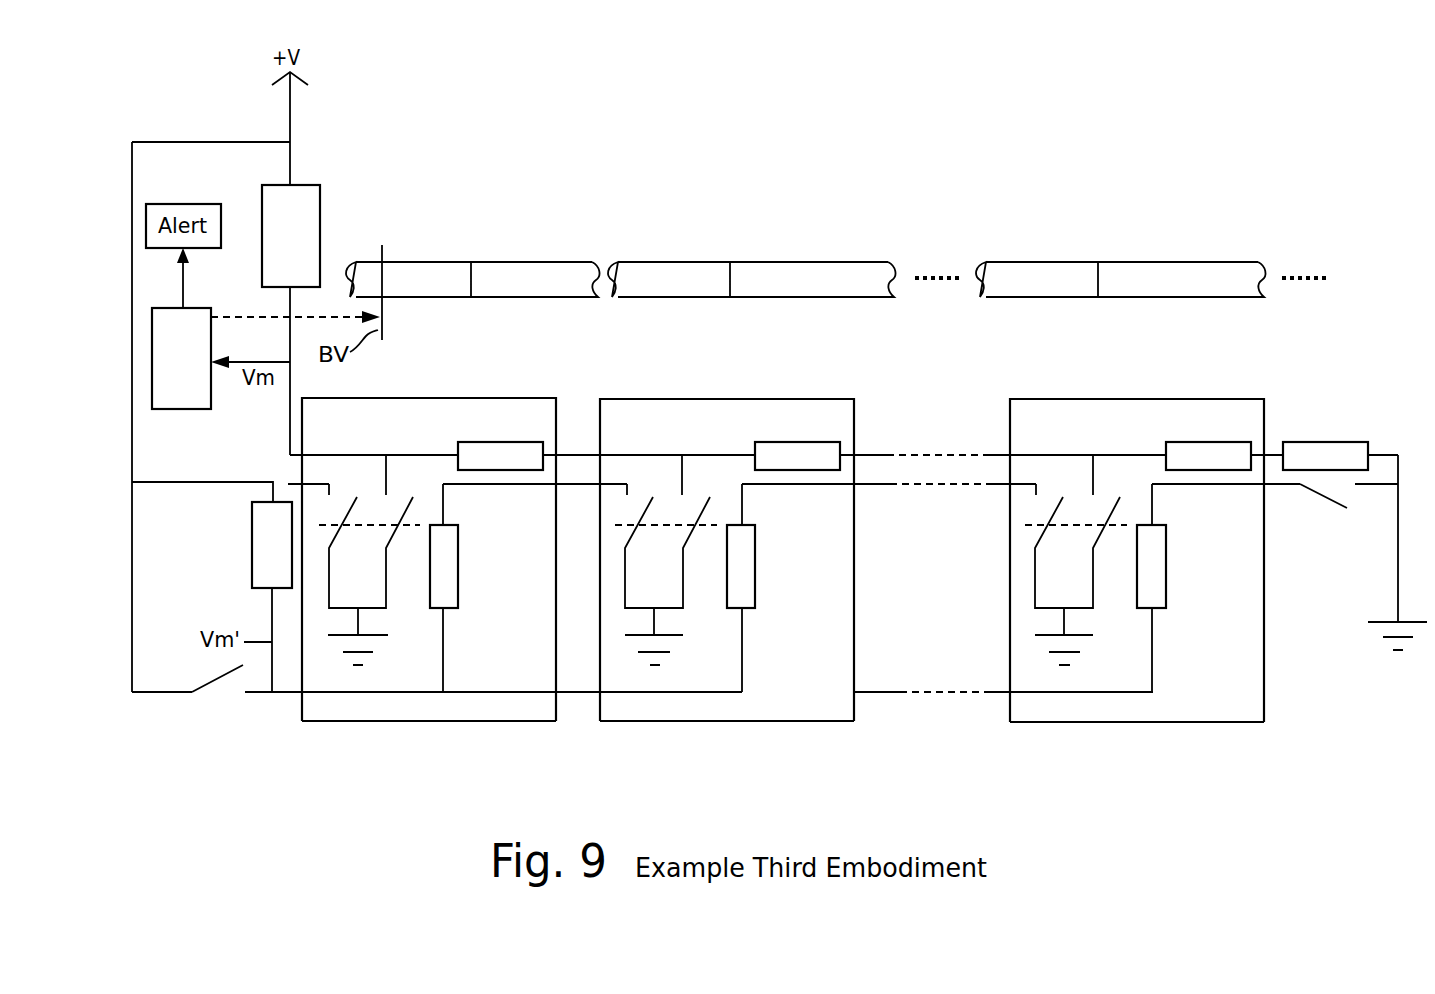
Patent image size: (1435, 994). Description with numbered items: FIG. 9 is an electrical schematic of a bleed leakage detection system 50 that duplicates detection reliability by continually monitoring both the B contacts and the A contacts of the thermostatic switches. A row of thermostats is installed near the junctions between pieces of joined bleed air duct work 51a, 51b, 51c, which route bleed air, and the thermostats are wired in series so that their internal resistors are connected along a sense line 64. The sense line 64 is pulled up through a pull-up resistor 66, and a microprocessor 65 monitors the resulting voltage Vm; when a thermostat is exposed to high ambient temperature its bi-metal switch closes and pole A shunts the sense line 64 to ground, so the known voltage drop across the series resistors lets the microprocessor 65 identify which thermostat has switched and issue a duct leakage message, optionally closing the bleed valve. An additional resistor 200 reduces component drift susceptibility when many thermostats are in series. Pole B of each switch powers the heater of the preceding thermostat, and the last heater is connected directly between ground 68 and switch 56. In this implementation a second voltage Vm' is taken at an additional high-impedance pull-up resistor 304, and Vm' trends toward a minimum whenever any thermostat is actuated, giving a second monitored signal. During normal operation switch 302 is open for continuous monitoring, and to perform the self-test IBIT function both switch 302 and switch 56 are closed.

The thermostat leakage detection system 50 is at (620, 182).
The bleed air duct work 51a is at (422, 262).
The bleed air duct work 51b is at (527, 262).
The bleed air duct work 51c is at (812, 262).
The switch 56 is at (218, 680).
The sense line 64 is at (937, 455).
The microprocessor 65 is at (175, 409).
The pull-up resistor Rp 66 is at (322, 218).
The ground 68 is at (1398, 497).
The resistor Rf 200 is at (1353, 442).
The switch 302 is at (1347, 508).
The pull-up resistor Rp' 304 is at (252, 527).